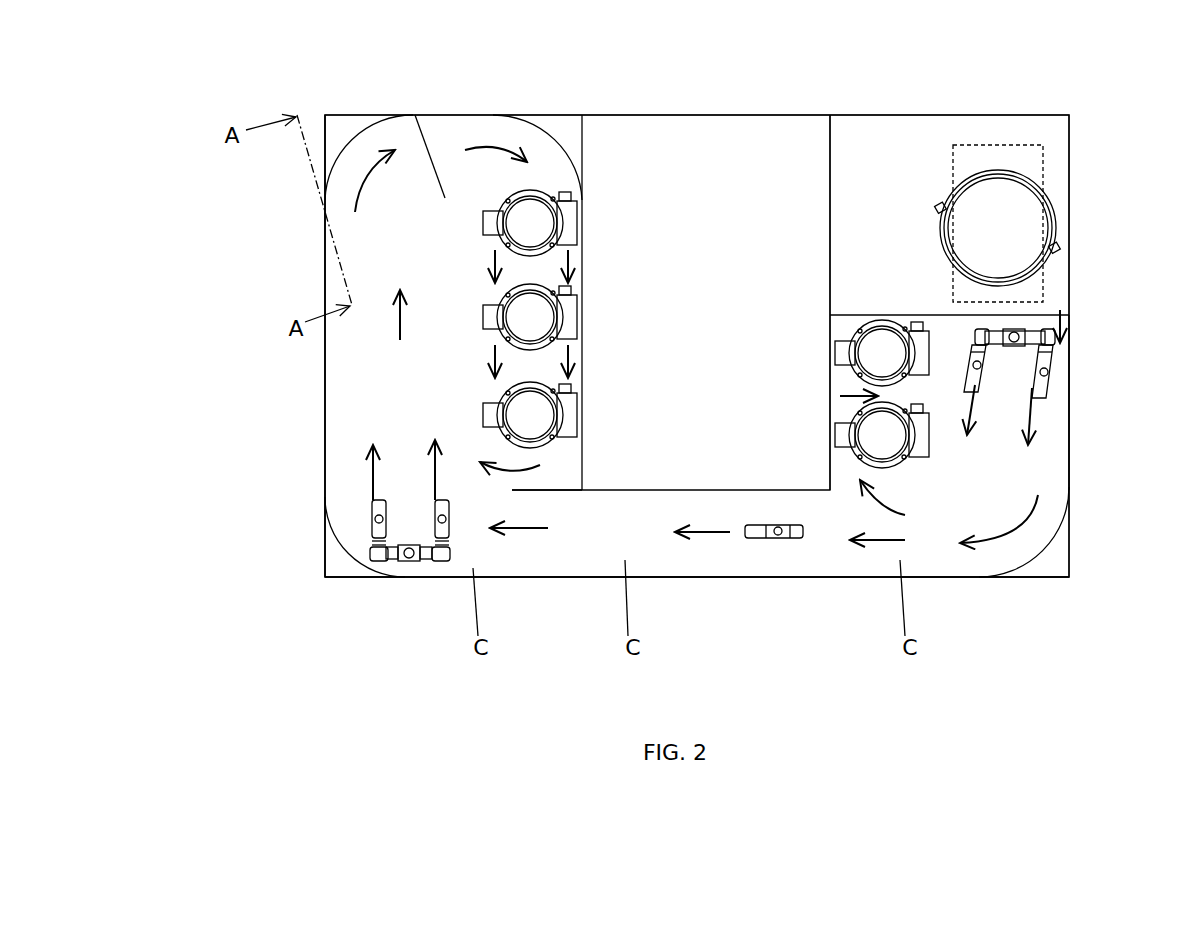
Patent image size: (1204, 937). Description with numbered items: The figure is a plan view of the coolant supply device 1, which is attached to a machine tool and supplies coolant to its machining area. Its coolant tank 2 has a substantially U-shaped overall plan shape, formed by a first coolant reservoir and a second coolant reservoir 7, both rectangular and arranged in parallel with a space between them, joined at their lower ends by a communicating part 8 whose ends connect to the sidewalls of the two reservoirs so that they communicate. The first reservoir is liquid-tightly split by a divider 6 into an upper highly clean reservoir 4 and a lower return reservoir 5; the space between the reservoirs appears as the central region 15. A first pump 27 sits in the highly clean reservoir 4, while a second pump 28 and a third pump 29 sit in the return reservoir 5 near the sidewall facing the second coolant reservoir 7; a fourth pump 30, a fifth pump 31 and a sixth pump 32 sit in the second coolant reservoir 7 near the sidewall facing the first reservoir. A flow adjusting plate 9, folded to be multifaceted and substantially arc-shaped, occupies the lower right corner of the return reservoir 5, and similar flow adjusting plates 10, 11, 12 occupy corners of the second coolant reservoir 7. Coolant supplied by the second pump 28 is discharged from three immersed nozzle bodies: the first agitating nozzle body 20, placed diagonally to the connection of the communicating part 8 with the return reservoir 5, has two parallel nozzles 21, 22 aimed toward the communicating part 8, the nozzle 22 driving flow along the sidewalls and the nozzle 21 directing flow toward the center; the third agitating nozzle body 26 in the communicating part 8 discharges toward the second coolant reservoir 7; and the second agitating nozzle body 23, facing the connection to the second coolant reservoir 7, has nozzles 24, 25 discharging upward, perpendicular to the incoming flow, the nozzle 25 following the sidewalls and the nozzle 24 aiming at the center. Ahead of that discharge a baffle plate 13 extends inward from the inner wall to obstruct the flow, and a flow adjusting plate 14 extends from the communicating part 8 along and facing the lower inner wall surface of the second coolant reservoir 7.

The coolant supply device 1 is at (677, 24).
The coolant tank 2 is at (667, 578).
The highly clean reservoir 4 is at (1065, 212).
The return reservoir 5 is at (1052, 466).
The divider 6 is at (1042, 315).
The second coolant reservoir 7 is at (350, 442).
The communicating part 8 is at (705, 560).
The flow adjusting plate 9 is at (1050, 536).
The flow adjusting plate 10 is at (355, 558).
The flow adjusting plate 11 is at (365, 118).
The flow adjusting plate 12 is at (545, 118).
The baffle plate 13 is at (428, 150).
The flow adjusting plate 14 is at (565, 493).
The central chamber 15 is at (744, 145).
The first agitating nozzle body 20 is at (1060, 355).
The nozzle 21 is at (1037, 400).
The nozzle 22 is at (1048, 378).
The second agitating nozzle body 23 is at (420, 572).
The nozzle 24 is at (375, 500).
The nozzle 25 is at (372, 515).
The third agitating nozzle body 26 is at (773, 540).
The first pump 27 is at (1040, 208).
The second pump 28 is at (905, 365).
The third pump 29 is at (912, 452).
The fourth pump 30 is at (568, 213).
The fifth pump 31 is at (500, 320).
The sixth pump 32 is at (498, 414).